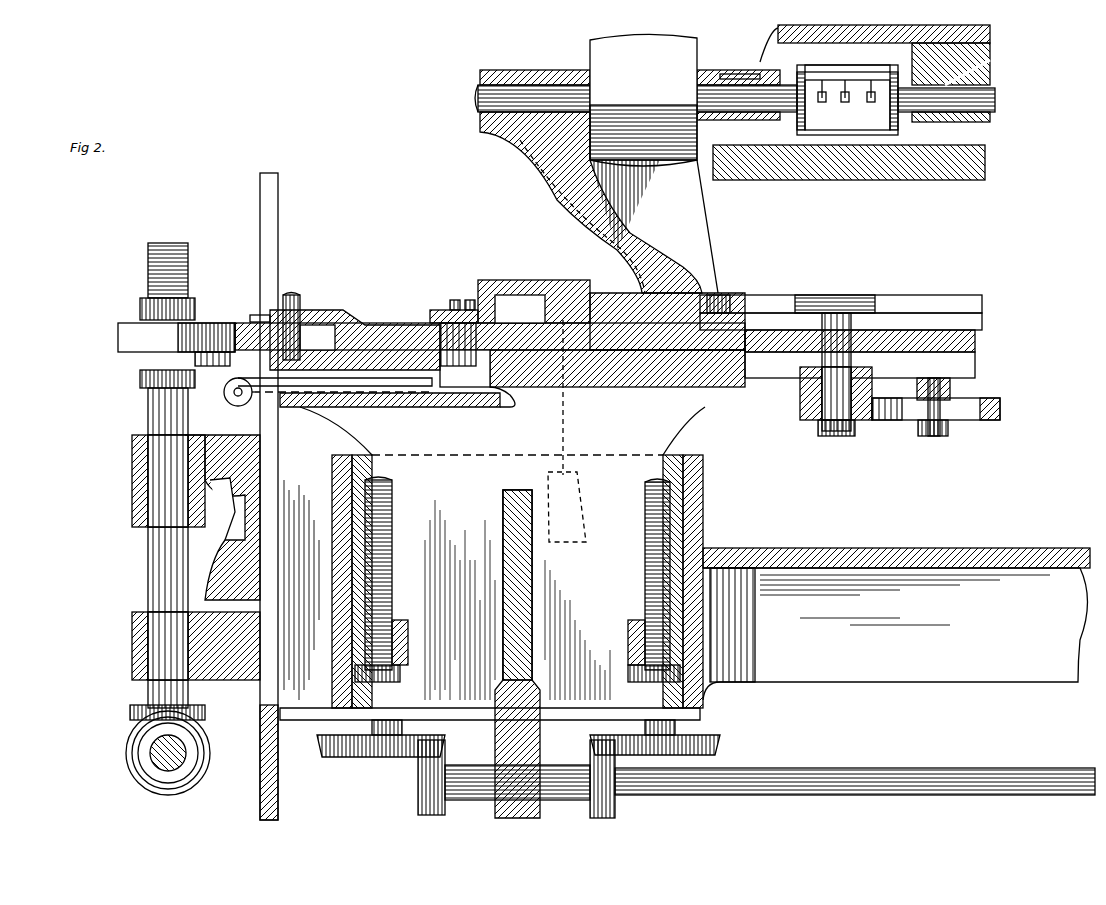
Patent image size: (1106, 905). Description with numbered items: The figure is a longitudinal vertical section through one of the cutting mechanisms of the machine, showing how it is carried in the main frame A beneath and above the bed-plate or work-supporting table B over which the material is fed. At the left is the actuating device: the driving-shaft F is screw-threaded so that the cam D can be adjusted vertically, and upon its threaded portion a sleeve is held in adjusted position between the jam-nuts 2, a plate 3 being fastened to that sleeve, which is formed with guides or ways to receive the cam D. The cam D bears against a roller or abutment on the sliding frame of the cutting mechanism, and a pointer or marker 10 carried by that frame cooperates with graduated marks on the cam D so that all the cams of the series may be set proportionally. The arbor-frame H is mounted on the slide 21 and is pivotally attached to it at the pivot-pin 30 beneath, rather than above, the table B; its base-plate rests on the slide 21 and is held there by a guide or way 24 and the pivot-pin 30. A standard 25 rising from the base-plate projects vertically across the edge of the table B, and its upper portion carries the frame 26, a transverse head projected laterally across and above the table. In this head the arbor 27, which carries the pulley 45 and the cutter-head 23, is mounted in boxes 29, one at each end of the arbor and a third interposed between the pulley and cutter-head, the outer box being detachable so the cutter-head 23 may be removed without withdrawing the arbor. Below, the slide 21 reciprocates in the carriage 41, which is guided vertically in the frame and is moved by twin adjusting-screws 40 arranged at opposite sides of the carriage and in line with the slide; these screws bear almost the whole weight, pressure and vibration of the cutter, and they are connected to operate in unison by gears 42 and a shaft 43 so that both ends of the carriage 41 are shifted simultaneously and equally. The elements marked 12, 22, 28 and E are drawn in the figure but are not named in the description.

The jam-nuts 2 is at (195, 308).
The plate 3 is at (215, 322).
The pointer or marker 10 is at (262, 315).
The pin 12 is at (318, 305).
The slide 21 is at (537, 355).
The main supporting bar 22 is at (608, 350).
The cutter-head 23 is at (800, 65).
The guide or way 24 is at (480, 276).
The standard 25 is at (575, 218).
The frame 26 is at (875, 41).
The arbor 27 is at (636, 95).
The shaft end 28 is at (950, 122).
The boxes 29 is at (745, 122).
The pivot-pin 30 is at (897, 365).
The twin adjusting-screws 40 is at (380, 590).
The carriage 41 is at (517, 569).
The gears 42 is at (518, 769).
The shaft 43 is at (793, 768).
The pulley 45 is at (643, 100).
The main frame A is at (685, 563).
The bed-plate or work-supporting table B is at (849, 162).
The cam D is at (118, 328).
The bracket E is at (355, 324).
The driving-shaft F is at (193, 615).
The arbor-frame H is at (599, 202).